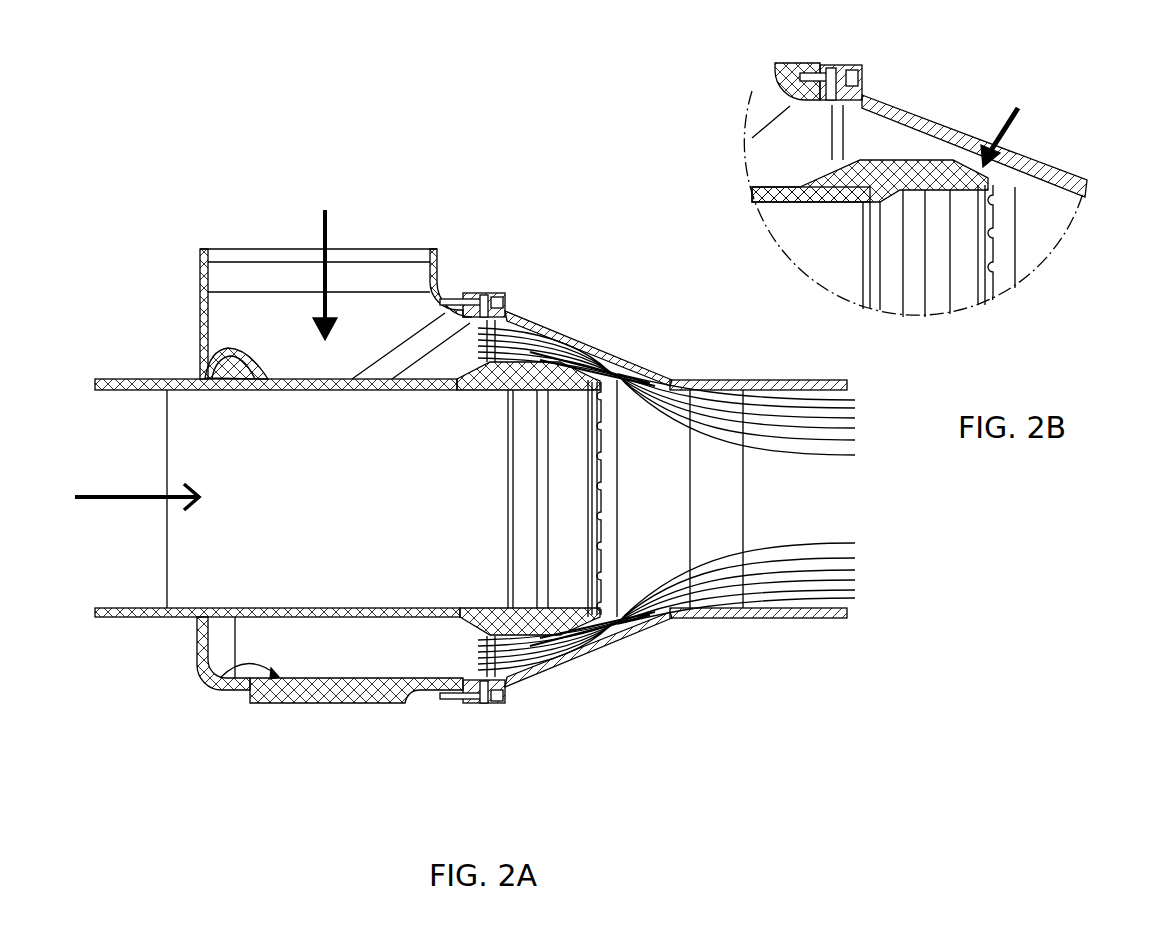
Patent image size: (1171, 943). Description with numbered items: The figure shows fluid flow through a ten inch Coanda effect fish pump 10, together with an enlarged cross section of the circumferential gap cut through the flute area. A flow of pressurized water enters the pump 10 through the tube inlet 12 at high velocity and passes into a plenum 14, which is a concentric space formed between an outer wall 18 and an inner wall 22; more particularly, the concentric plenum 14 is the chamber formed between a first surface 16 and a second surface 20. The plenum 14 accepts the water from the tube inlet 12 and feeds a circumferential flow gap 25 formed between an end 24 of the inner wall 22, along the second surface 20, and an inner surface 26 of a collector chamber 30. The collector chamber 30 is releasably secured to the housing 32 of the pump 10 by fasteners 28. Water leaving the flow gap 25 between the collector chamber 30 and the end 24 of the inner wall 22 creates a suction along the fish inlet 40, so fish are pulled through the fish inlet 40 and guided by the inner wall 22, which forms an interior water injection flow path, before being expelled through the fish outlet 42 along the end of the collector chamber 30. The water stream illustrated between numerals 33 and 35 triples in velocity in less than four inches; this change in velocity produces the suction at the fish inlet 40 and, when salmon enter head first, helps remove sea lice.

In FIG. 2A, the Coanda effect fish pump 10 is at (194, 215).
In FIG. 2A, the tube inlet 12 is at (398, 248).
In FIG. 2A, the plenum 14 is at (403, 655).
In FIG. 2A, the first surface 16 is at (222, 673).
In FIG. 2A, the outer wall 18 is at (325, 703).
In FIG. 2A, the second surface 20 is at (428, 618).
In FIG. 2A, the inner wall 22 is at (147, 617).
In FIG. 2A, the end of the inner wall 24 is at (600, 543).
In FIG. 2B, the end of the inner wall 24 is at (993, 285).
In FIG. 2B, the circumferential flow gap 25 is at (895, 190).
In FIG. 2B, the inner surface of collector chamber 26 is at (1055, 195).
In FIG. 2A, the fasteners 28 is at (505, 302).
In FIG. 2A, the collector chamber 30 is at (617, 363).
In FIG. 2A, the housing 32 is at (452, 296).
In FIG. 2A, the water stream start point 33 is at (515, 347).
In FIG. 2A, the water stream end point 35 is at (668, 388).
In FIG. 2A, the fish inlet 40 is at (115, 497).
In FIG. 2A, the fish outlet 42 is at (745, 618).